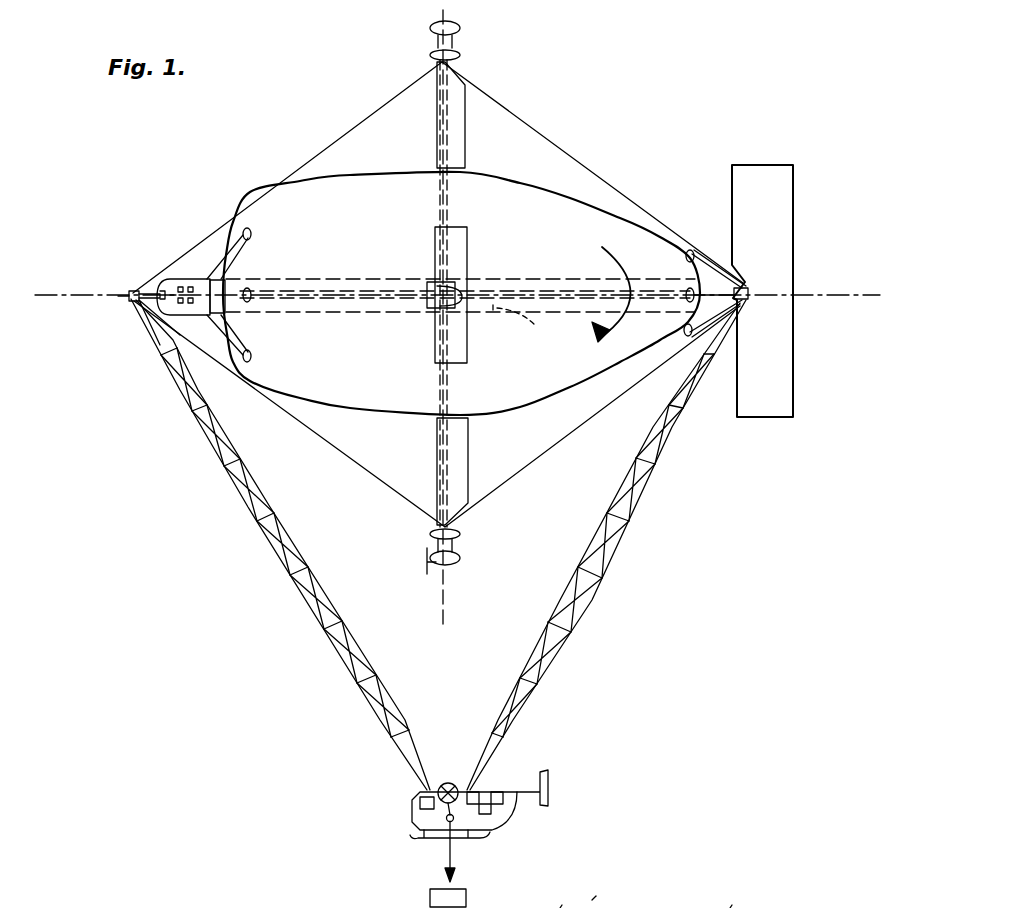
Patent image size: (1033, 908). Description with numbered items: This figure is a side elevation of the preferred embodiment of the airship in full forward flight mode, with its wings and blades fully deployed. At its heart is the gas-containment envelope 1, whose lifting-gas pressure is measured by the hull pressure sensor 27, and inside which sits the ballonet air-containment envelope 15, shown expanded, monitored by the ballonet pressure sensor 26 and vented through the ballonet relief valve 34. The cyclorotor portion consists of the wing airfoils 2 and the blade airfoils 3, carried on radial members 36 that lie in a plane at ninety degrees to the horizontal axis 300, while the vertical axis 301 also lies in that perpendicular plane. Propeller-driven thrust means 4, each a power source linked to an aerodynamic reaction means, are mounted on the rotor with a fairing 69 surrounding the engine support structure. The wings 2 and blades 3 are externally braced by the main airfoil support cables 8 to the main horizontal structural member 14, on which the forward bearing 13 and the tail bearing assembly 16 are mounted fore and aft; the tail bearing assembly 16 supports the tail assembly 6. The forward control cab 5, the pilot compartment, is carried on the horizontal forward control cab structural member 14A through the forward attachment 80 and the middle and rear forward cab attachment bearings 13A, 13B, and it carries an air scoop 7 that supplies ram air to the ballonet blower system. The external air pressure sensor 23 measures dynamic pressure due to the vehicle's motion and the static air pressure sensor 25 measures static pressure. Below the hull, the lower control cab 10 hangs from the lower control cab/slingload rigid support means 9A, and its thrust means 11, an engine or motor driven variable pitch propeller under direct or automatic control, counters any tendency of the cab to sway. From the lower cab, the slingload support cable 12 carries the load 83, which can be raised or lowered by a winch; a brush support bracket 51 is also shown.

The gas-containment envelope 1 is at (526, 194).
The wing airfoils 2 is at (458, 55).
The blade airfoils 3 is at (438, 137).
The thrust means 4 is at (455, 28).
The forward control cab 5 is at (194, 285).
The tail assembly 6 is at (770, 228).
The air scoop 7 is at (152, 335).
The main airfoil support cables 8 is at (300, 166).
The lower control cab/slingload rigid support means 9A is at (318, 622).
The lower control cab 10 is at (413, 809).
The thrust means for controlling swing of the lower control cab 11 is at (458, 775).
The slingload support cable 12 is at (458, 860).
The forward bearing 13 is at (130, 292).
The middle forward cab attachment bearing 13A is at (536, 898).
The rear forward cab attachment bearing 13B is at (739, 898).
The main horizontal structural member 14 is at (722, 274).
The horizontal forward control cab structural member 14A is at (130, 300).
The ballonet air-containment envelope 15 is at (362, 280).
The tail bearing assembly 16 is at (748, 290).
The sensor of external air pressure 23 is at (128, 294).
The static air pressure sensor 25 is at (746, 288).
The ballonet pressure sensor 26 is at (525, 325).
The hull pressure sensor 27 is at (229, 295).
The ballonet relief valve 34 is at (634, 294).
The radial members 36 is at (450, 207).
The brush support bracket 51 is at (603, 890).
The fairing 69 is at (452, 42).
The forward attachment 80 is at (176, 292).
The load 83 is at (430, 897).
The horizontal axis 300 is at (858, 282).
The vertical axis 301 is at (445, 13).